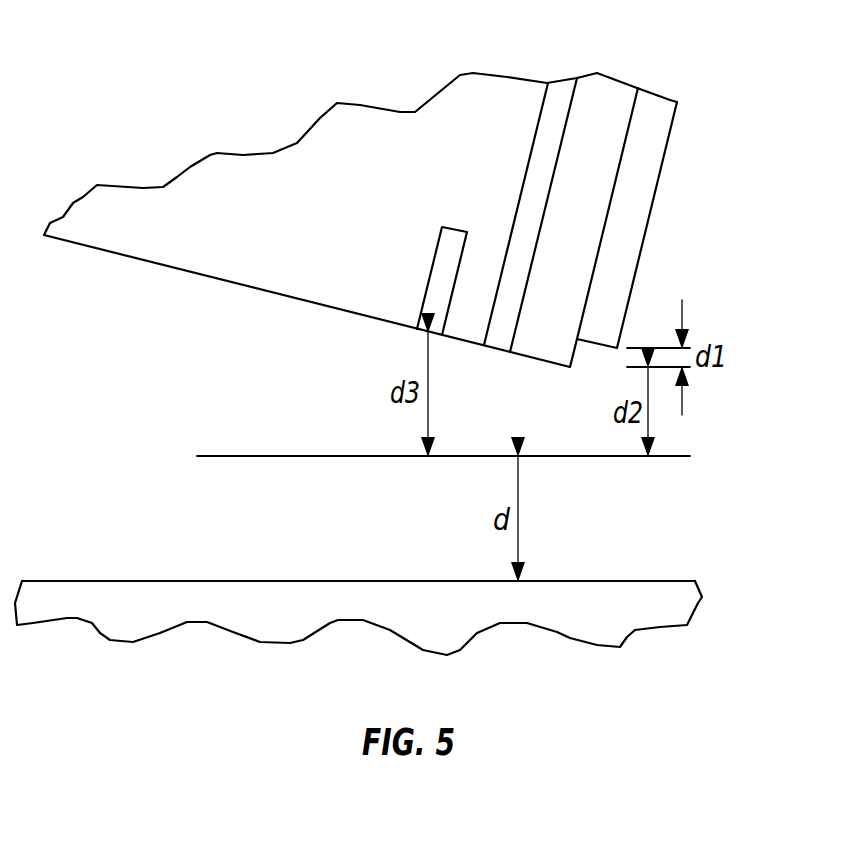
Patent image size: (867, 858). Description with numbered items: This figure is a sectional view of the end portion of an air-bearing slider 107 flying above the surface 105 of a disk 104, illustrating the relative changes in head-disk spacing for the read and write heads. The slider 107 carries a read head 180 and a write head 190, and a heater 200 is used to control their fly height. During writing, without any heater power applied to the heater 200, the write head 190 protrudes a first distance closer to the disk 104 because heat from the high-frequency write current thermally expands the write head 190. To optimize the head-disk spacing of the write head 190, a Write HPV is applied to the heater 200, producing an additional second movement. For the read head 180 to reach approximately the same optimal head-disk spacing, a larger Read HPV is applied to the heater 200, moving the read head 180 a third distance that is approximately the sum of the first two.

The slider 107 is at (190, 183).
The heater 200 is at (567, 90).
The write head 190 is at (652, 153).
The read head 180 is at (455, 228).
The disk 104 is at (617, 593).
The surface of disk 105 is at (137, 577).